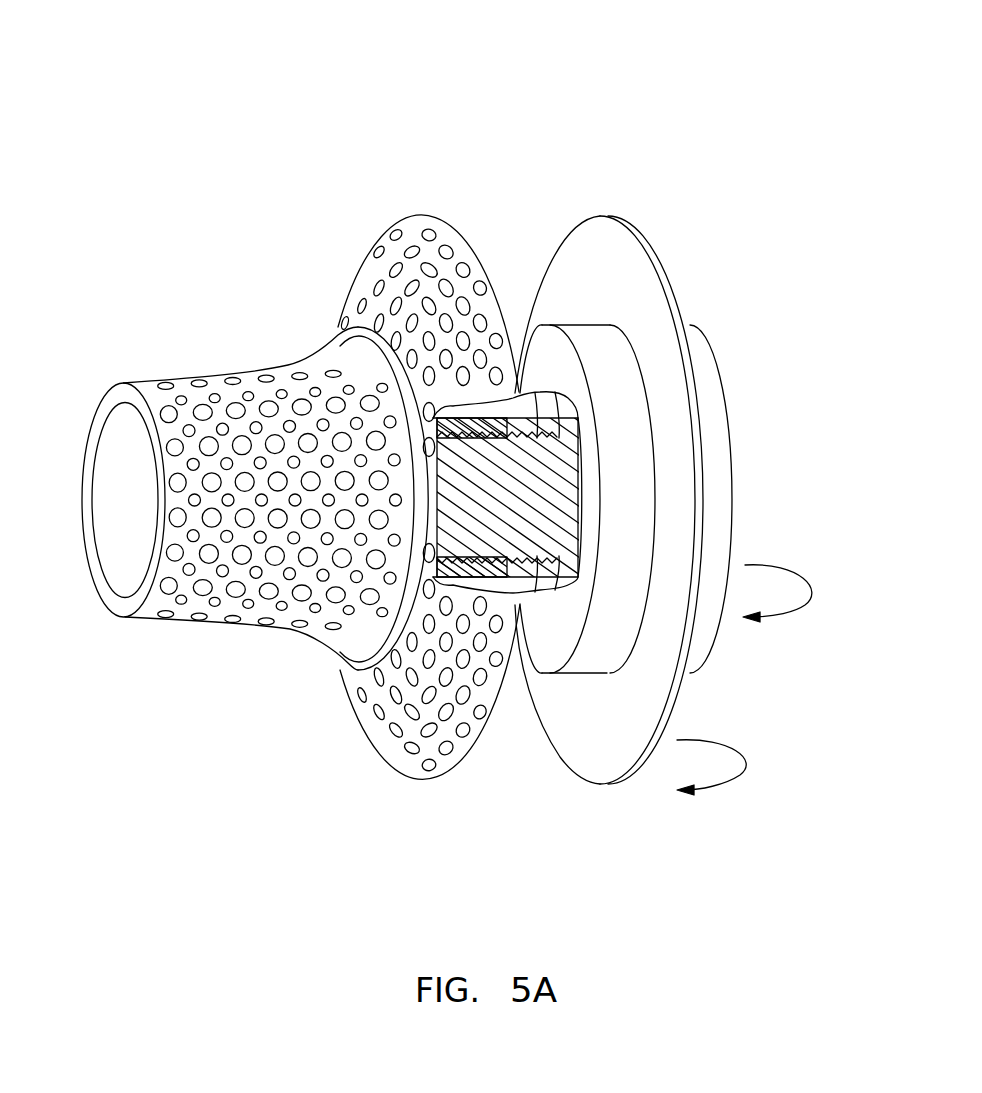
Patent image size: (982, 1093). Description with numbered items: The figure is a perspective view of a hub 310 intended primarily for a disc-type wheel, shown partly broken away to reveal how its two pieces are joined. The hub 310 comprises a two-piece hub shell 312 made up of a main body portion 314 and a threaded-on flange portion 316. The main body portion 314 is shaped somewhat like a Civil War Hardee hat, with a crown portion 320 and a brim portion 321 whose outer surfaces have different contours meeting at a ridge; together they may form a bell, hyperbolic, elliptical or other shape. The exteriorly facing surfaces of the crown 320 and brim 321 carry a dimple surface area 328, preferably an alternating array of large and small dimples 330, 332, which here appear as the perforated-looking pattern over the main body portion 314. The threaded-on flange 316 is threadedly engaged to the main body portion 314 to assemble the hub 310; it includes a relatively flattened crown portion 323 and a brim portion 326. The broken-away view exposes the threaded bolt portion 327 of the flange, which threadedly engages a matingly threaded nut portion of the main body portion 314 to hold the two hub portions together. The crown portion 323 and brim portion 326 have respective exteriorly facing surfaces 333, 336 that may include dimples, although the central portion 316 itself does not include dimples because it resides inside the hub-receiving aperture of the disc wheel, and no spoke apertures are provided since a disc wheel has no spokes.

The hub 310 is at (541, 128).
The two-piece hub shell 312 is at (607, 218).
The main body portion 314 is at (122, 382).
The threaded-on flange portion 316 is at (657, 257).
The crown portion 320 is at (167, 620).
The brim portion 321 is at (375, 752).
The crown portion 323 is at (713, 640).
The brim portion 326 is at (610, 784).
The threaded bolt portion 327 is at (527, 393).
The dimple surface area 328 is at (305, 365).
The large dimples 330 is at (407, 217).
The small dimples 332 is at (477, 272).
The exteriorly facing surface 333 is at (800, 593).
The exteriorly facing surface 336 is at (736, 767).